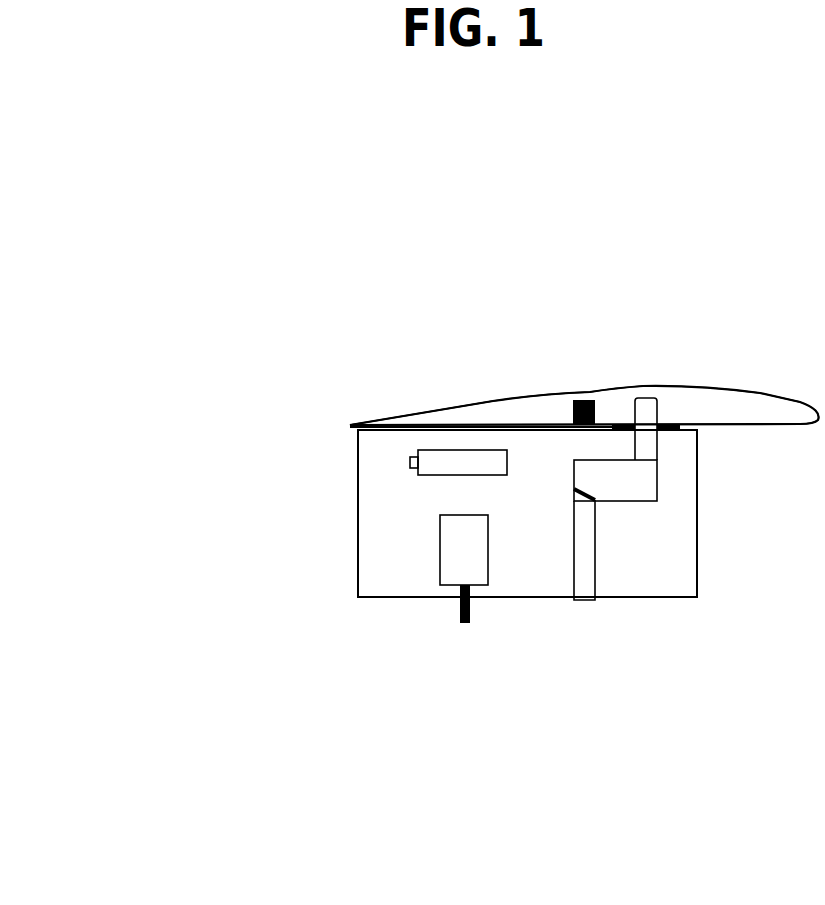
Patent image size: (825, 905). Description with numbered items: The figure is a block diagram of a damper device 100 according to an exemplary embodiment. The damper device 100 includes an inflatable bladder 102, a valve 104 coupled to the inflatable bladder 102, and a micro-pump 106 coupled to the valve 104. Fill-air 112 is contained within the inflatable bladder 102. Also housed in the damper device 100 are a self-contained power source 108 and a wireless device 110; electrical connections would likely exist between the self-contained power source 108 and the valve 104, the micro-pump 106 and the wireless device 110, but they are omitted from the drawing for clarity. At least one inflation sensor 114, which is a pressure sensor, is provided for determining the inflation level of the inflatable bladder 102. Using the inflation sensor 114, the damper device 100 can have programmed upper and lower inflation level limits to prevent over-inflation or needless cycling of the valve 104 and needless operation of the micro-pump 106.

The damper device 100 is at (366, 649).
The inflatable bladder 102 is at (579, 375).
The valve 104 is at (632, 460).
The micro-pump 106 is at (698, 530).
The self-contained power source 108 is at (384, 506).
The wireless device 110 is at (399, 600).
The fill-air 112 is at (584, 352).
The inflation sensor 114 is at (510, 350).